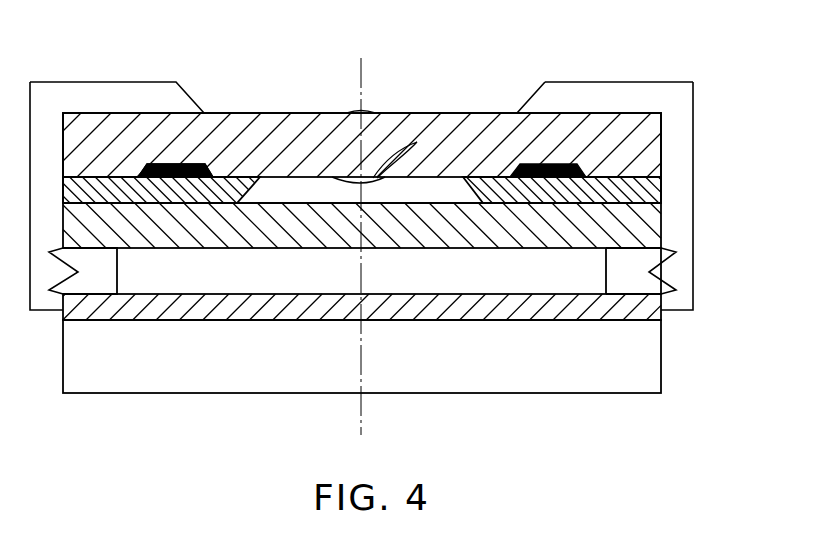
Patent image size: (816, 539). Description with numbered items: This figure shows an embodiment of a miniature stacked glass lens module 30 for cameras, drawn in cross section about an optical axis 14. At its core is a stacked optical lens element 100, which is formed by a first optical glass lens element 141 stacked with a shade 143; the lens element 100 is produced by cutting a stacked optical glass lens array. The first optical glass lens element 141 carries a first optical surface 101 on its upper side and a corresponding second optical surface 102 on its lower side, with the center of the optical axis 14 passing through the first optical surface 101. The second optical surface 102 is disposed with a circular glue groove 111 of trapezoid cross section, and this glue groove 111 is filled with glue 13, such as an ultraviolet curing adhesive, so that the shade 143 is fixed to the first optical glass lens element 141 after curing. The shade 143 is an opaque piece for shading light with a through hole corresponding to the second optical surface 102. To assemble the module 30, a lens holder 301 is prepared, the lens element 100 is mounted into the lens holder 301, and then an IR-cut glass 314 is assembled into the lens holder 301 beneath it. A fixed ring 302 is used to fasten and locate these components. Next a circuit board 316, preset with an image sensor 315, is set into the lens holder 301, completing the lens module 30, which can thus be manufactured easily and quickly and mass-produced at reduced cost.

The miniature stacked glass lens module 30 is at (620, 63).
The lens holder 301 is at (661, 99).
The stacked optical lens element 100 is at (741, 138).
The first optical glass lens element 141 is at (643, 163).
The shade 143 is at (643, 193).
The IR-cut glass 314 is at (655, 229).
The fixed ring 302 is at (639, 267).
The image sensor 315 is at (641, 312).
The circuit board 316 is at (652, 348).
The glue groove 111 is at (187, 163).
The glue 13 is at (160, 165).
The optical axis 14 is at (362, 235).
The first optical surface 101 is at (370, 113).
The second optical surface 102 is at (417, 142).